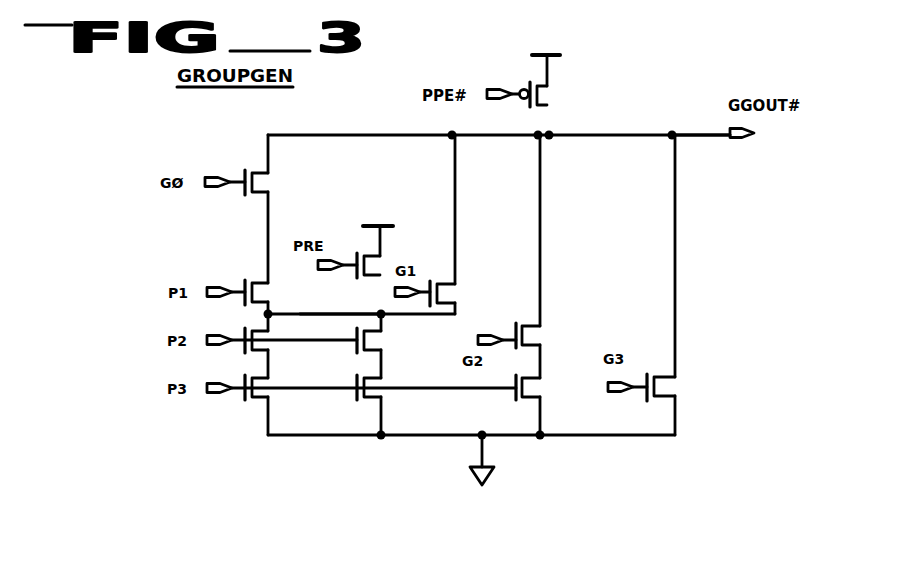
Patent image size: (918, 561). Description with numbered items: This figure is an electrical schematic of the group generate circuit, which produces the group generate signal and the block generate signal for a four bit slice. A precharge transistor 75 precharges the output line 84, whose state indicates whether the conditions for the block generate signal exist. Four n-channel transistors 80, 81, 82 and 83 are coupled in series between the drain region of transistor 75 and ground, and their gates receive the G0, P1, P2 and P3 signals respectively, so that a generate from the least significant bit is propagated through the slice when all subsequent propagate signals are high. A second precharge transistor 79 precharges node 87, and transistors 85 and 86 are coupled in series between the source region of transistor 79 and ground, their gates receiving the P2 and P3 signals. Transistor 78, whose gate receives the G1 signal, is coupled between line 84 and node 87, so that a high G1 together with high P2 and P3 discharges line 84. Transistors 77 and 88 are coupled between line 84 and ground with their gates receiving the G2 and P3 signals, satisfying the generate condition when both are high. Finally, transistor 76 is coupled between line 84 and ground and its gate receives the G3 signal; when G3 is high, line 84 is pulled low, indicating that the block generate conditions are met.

The transistor 75 is at (549, 99).
The transistor 76 is at (670, 387).
The transistor 77 is at (537, 341).
The transistor 78 is at (450, 293).
The transistor 79 is at (375, 268).
The n-channel transistor 80 is at (262, 186).
The n-channel transistor 81 is at (263, 297).
The n-channel transistor 82 is at (268, 343).
The n-channel transistor 83 is at (268, 391).
The line 84 is at (708, 137).
The transistor 85 is at (377, 343).
The transistor 86 is at (381, 396).
The node 87 is at (350, 312).
The n-channel transistor 88 is at (537, 393).